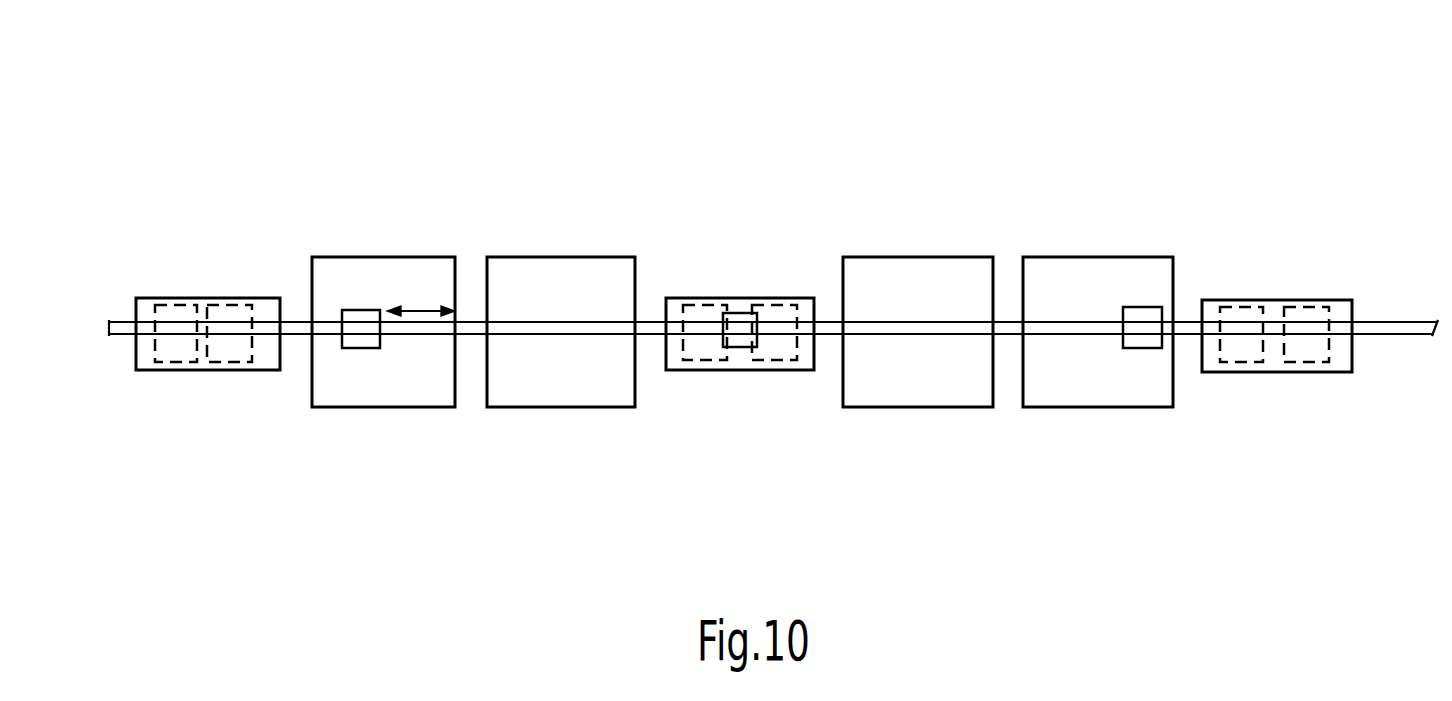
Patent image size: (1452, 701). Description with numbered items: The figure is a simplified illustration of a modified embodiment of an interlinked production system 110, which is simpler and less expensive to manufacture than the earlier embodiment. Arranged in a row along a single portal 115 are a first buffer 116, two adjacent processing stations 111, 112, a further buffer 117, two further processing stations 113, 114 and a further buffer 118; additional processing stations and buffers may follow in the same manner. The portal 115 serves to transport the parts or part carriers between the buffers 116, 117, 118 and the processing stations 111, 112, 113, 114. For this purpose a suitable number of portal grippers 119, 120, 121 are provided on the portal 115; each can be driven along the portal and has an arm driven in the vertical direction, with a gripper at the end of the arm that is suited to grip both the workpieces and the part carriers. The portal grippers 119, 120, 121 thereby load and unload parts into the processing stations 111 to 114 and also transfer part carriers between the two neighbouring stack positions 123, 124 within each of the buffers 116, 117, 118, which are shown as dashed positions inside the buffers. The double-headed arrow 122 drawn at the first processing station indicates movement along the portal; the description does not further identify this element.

The interlinked production system 110 is at (1210, 192).
The processing station 111 is at (363, 275).
The processing station 112 is at (562, 275).
The further processing station 113 is at (892, 280).
The further processing station 114 is at (1085, 272).
The portal 115 is at (608, 328).
The first buffer 116 is at (207, 303).
The further buffer 117 is at (740, 308).
The further buffer 118 is at (1337, 311).
The portal gripper 119 is at (362, 340).
The portal gripper 120 is at (738, 340).
The portal gripper 121 is at (1142, 342).
The direction of axial movement 122 is at (420, 310).
The stack position 123 is at (175, 350).
The stack position 124 is at (232, 350).